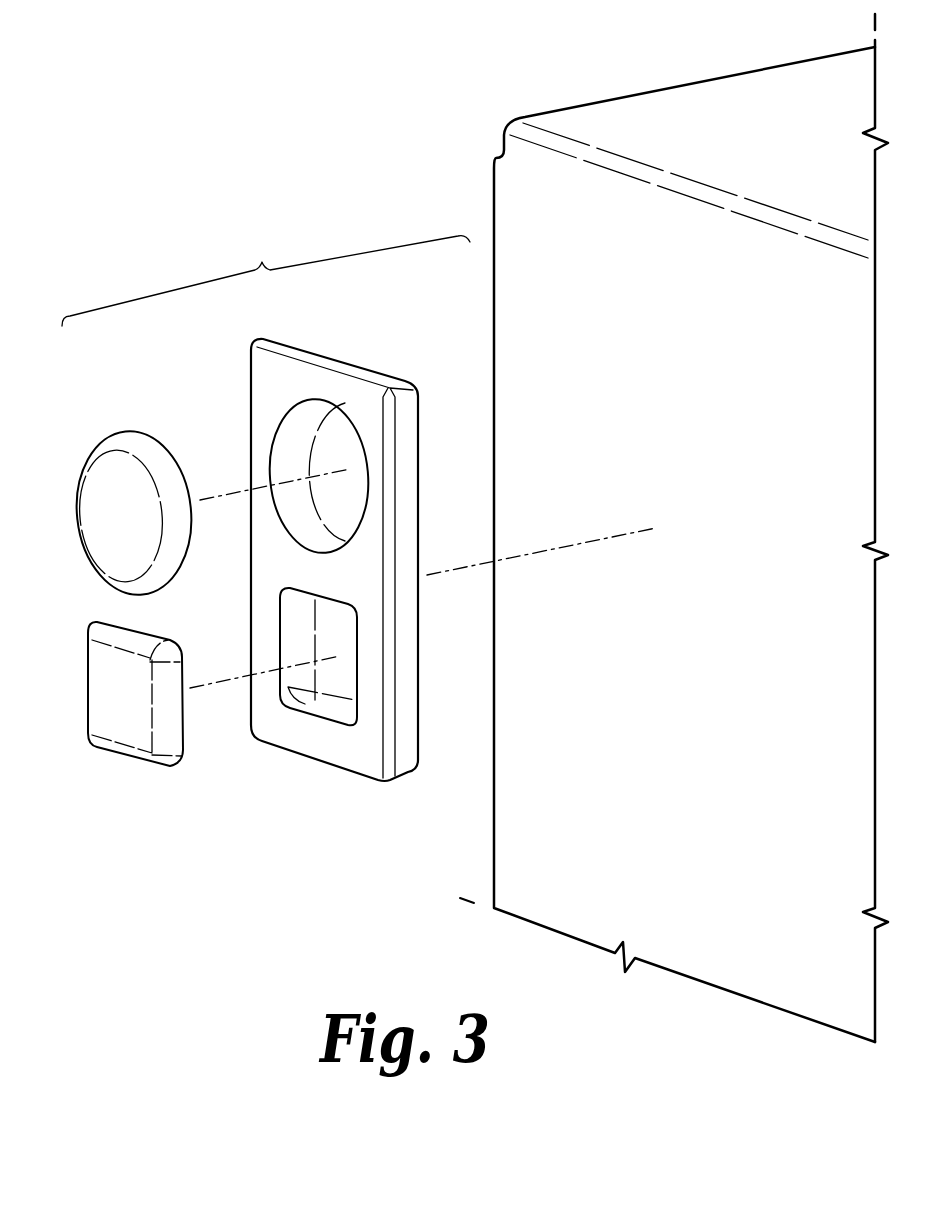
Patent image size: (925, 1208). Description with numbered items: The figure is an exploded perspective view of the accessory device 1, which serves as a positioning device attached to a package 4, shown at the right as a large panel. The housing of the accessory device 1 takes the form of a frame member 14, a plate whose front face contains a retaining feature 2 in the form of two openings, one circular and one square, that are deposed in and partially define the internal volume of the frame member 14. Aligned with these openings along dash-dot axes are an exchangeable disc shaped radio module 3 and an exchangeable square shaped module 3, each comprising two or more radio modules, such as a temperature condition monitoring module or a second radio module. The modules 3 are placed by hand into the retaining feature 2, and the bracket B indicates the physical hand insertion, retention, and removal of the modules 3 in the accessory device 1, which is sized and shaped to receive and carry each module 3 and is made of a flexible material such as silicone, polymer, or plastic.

The accessory device 1 is at (308, 539).
The retaining feature 2 is at (292, 436).
The radio module 3 is at (112, 517).
The package 4 is at (544, 336).
The frame member 14 is at (275, 550).
The hand insertion, retention and/or removal of modules B is at (266, 281).